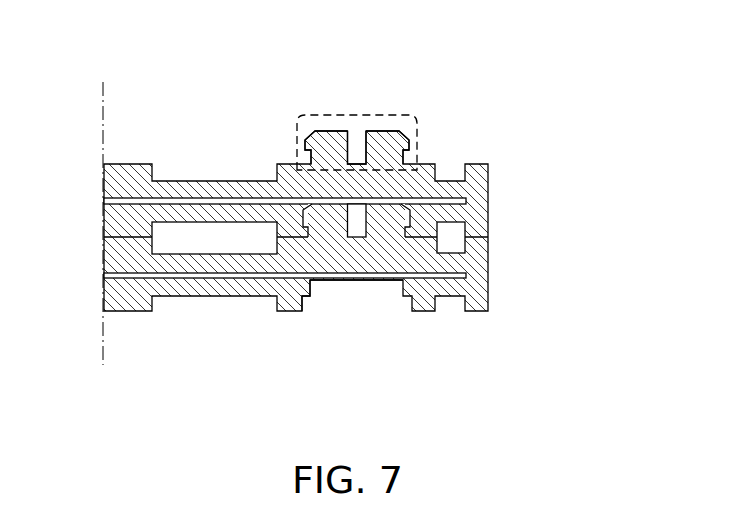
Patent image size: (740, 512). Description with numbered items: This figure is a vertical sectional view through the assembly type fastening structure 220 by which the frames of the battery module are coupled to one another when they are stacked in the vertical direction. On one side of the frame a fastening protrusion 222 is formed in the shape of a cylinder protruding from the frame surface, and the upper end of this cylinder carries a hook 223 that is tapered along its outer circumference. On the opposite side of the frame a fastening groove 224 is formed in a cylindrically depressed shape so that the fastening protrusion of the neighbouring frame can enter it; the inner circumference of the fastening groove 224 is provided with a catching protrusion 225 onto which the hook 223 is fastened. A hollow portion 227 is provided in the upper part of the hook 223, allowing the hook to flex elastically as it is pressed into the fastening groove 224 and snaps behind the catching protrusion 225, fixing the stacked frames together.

The assembly type fastening structure 220 is at (489, 177).
The fastening protrusion 222 is at (390, 108).
The hook 223 is at (407, 138).
The fastening groove 224 is at (384, 300).
The catching protrusion 225 is at (308, 283).
The hollow portion 227 is at (358, 150).